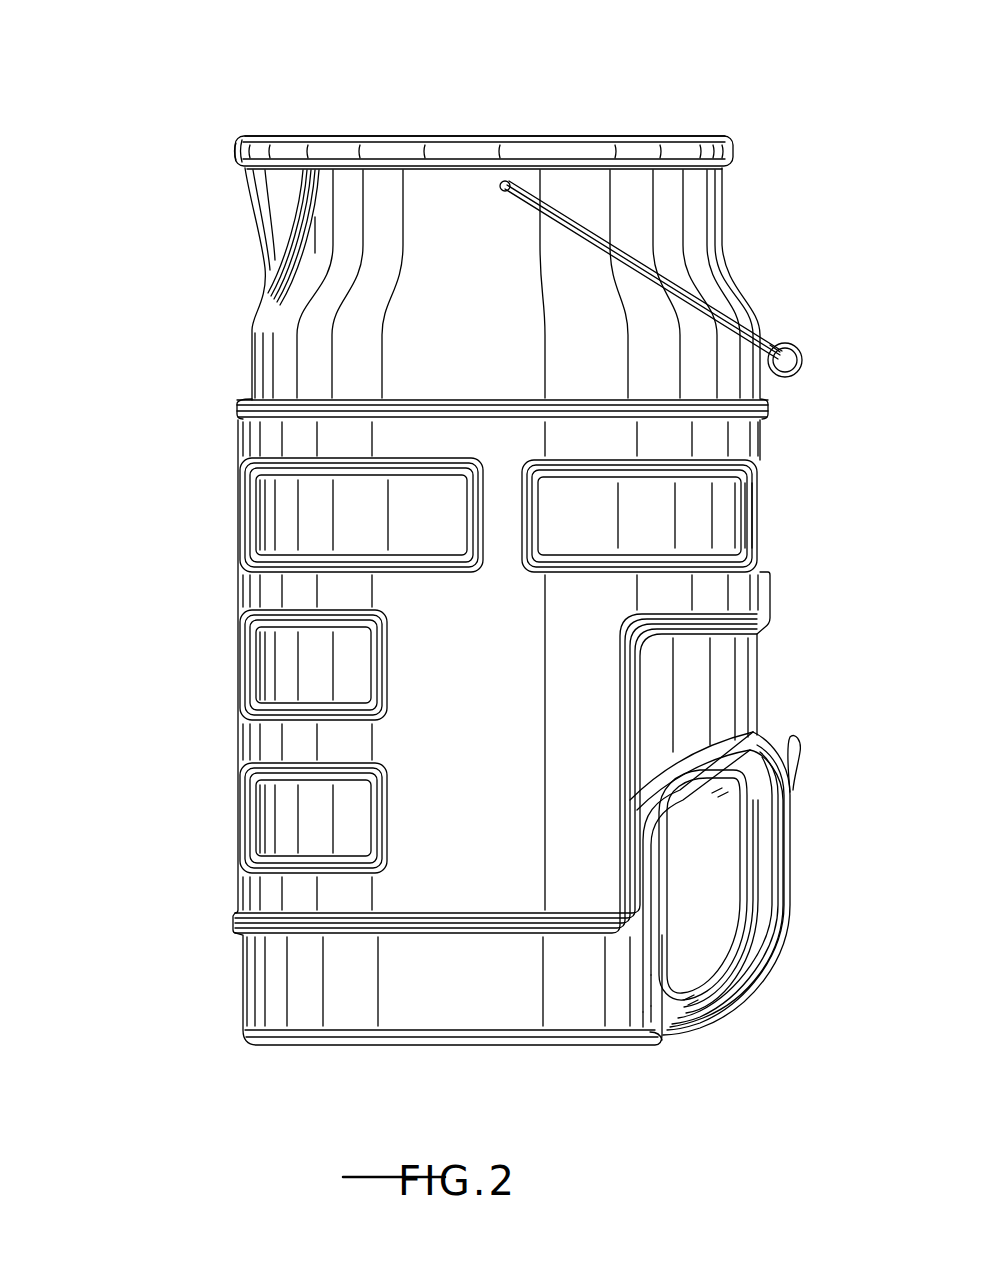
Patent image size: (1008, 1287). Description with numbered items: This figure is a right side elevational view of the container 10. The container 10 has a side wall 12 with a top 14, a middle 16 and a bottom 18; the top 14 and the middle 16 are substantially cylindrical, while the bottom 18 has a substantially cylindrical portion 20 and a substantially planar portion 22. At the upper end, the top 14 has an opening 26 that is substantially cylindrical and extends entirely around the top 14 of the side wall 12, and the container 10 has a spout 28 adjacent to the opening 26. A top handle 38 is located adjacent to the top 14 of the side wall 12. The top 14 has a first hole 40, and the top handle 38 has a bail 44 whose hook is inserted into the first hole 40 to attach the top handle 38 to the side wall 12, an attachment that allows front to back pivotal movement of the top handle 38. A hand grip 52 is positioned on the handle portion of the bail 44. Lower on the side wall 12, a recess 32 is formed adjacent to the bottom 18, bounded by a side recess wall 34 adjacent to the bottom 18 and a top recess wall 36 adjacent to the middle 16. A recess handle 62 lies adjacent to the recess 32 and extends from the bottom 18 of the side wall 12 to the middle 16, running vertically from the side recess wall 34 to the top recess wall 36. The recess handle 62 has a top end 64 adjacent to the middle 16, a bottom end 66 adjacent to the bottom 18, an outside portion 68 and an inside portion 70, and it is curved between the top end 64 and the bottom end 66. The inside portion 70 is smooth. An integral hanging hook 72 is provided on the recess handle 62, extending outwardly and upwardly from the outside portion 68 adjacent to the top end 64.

The container 10 is at (490, 576).
The side wall 12 is at (769, 442).
The top 14 is at (730, 137).
The middle 16 is at (771, 600).
The bottom 18 is at (662, 1037).
The substantially cylindrical portion 20 is at (240, 970).
The substantially planar portion 22 is at (663, 859).
The opening 26 is at (268, 136).
The spout 28 is at (233, 152).
The recess 32 is at (663, 895).
The side recess wall 34 is at (663, 935).
The top recess wall 36 is at (700, 790).
The top handle 38 is at (705, 297).
The first hole 40 is at (507, 184).
The bail 44 is at (762, 338).
The hand grip 52 is at (802, 355).
The recess handle 62 is at (795, 885).
The top end 64 is at (762, 757).
The bottom end 66 is at (680, 1035).
The outside portion 68 is at (790, 925).
The inside portion 70 is at (740, 828).
The hanging hook 72 is at (805, 770).